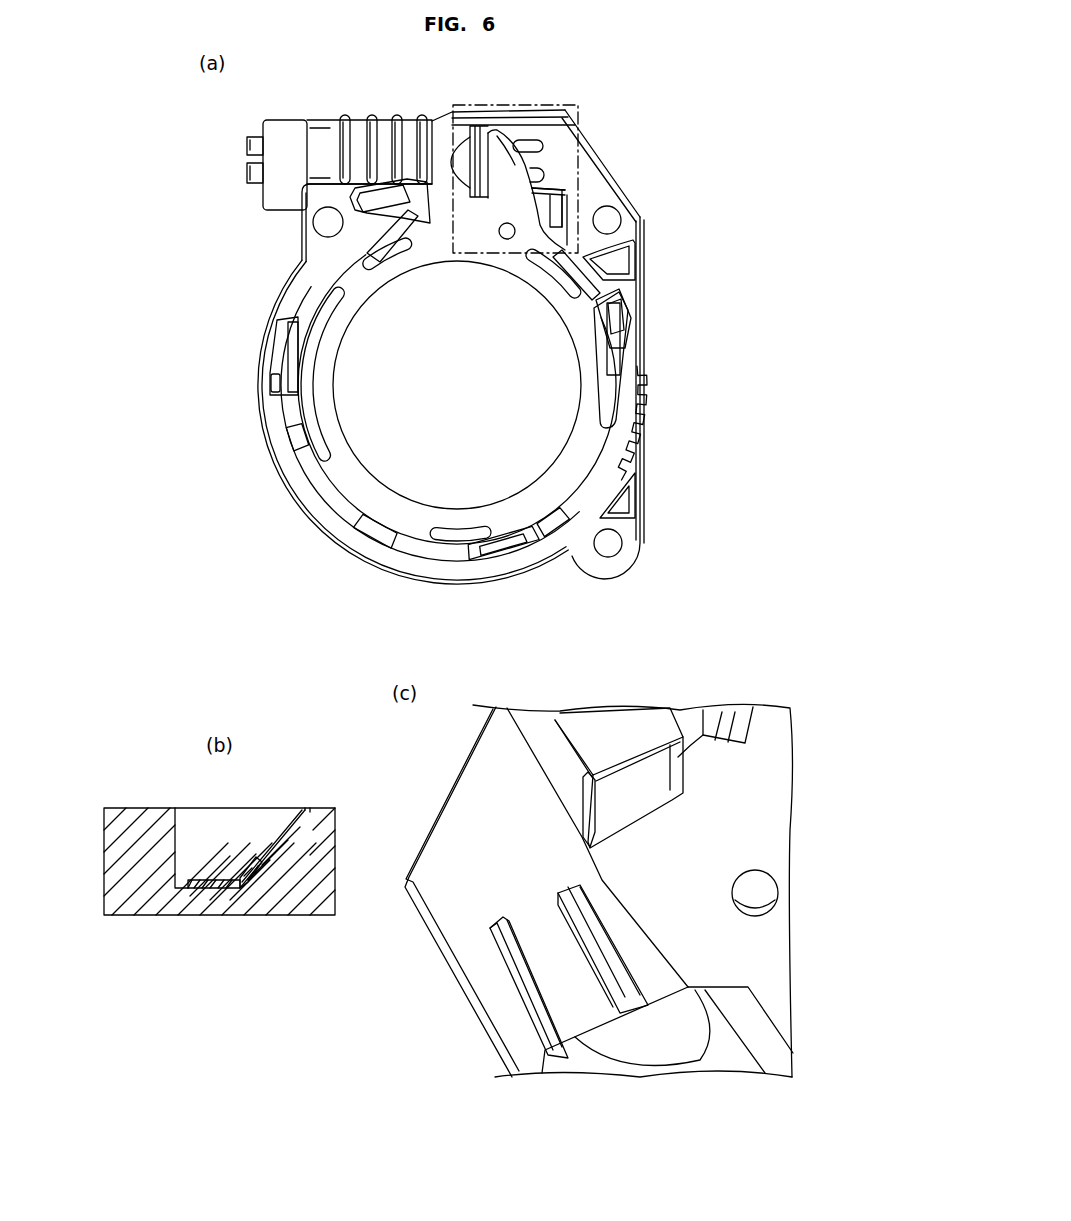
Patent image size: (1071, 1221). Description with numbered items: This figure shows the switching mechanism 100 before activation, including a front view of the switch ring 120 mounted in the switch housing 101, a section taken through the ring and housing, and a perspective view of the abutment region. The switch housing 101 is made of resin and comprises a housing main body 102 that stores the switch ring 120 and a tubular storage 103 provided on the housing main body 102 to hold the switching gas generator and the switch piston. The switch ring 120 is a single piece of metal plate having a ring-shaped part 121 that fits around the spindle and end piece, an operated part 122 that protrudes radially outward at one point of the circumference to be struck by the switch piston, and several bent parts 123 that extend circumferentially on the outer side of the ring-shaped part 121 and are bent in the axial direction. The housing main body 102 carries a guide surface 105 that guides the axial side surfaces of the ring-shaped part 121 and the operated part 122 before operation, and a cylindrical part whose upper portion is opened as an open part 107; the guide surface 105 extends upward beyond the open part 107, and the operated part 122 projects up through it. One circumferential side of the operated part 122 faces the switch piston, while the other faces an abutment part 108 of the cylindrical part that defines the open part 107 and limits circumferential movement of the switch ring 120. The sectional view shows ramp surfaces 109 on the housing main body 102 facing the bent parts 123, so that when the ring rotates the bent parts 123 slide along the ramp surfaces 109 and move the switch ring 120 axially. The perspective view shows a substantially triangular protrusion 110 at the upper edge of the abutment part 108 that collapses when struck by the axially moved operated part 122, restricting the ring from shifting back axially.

The lens mount unit 100 is at (674, 118).
The switch housing 101 is at (426, 88).
The housing main body 102 is at (422, 170).
The tubular storage 103 is at (320, 147).
The guide surface 105 is at (727, 780).
The open part 107 is at (493, 170).
The abutment part 108 is at (570, 205).
The ramp surfaces 109 is at (590, 278).
The protrusion 110 is at (572, 206).
The switch ring 120 is at (487, 510).
The ring-shaped part 121 is at (592, 389).
The operated part 122 is at (510, 172).
The bent parts 123 is at (574, 240).